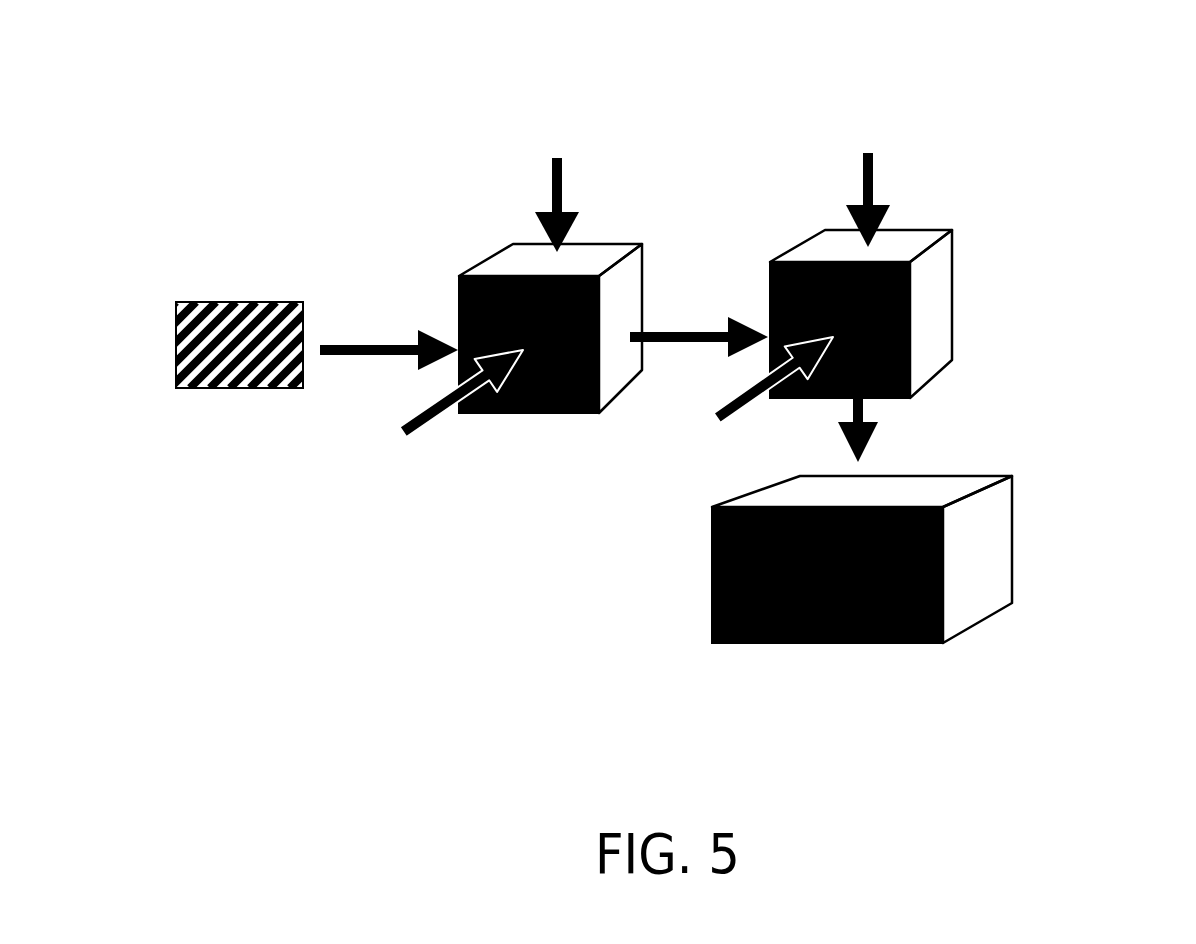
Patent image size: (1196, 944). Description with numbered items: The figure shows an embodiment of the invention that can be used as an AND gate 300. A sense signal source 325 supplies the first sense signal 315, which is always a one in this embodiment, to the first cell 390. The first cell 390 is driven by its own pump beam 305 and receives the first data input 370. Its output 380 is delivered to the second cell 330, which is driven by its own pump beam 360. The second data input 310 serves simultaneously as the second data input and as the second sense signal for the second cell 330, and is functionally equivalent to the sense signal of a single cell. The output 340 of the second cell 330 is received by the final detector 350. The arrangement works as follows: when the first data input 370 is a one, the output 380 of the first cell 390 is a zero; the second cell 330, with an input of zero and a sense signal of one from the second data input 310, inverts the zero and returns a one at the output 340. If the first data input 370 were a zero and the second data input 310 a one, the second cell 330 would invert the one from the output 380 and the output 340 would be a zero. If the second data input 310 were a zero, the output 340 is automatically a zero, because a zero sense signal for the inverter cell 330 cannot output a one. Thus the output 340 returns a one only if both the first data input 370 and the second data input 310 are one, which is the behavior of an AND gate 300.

The AND gate 300 is at (960, 112).
The sense signal source 325 is at (203, 315).
The first sense signal 315 is at (353, 357).
The first cell 390 is at (530, 400).
The first data input 370 is at (552, 190).
The pump beam 305 is at (412, 433).
The output of the first cell 380 is at (665, 343).
The second cell 330 is at (925, 322).
The second data input 310 is at (880, 218).
The pump beam 360 is at (712, 416).
The output 340 is at (877, 430).
The final detector 350 is at (977, 562).